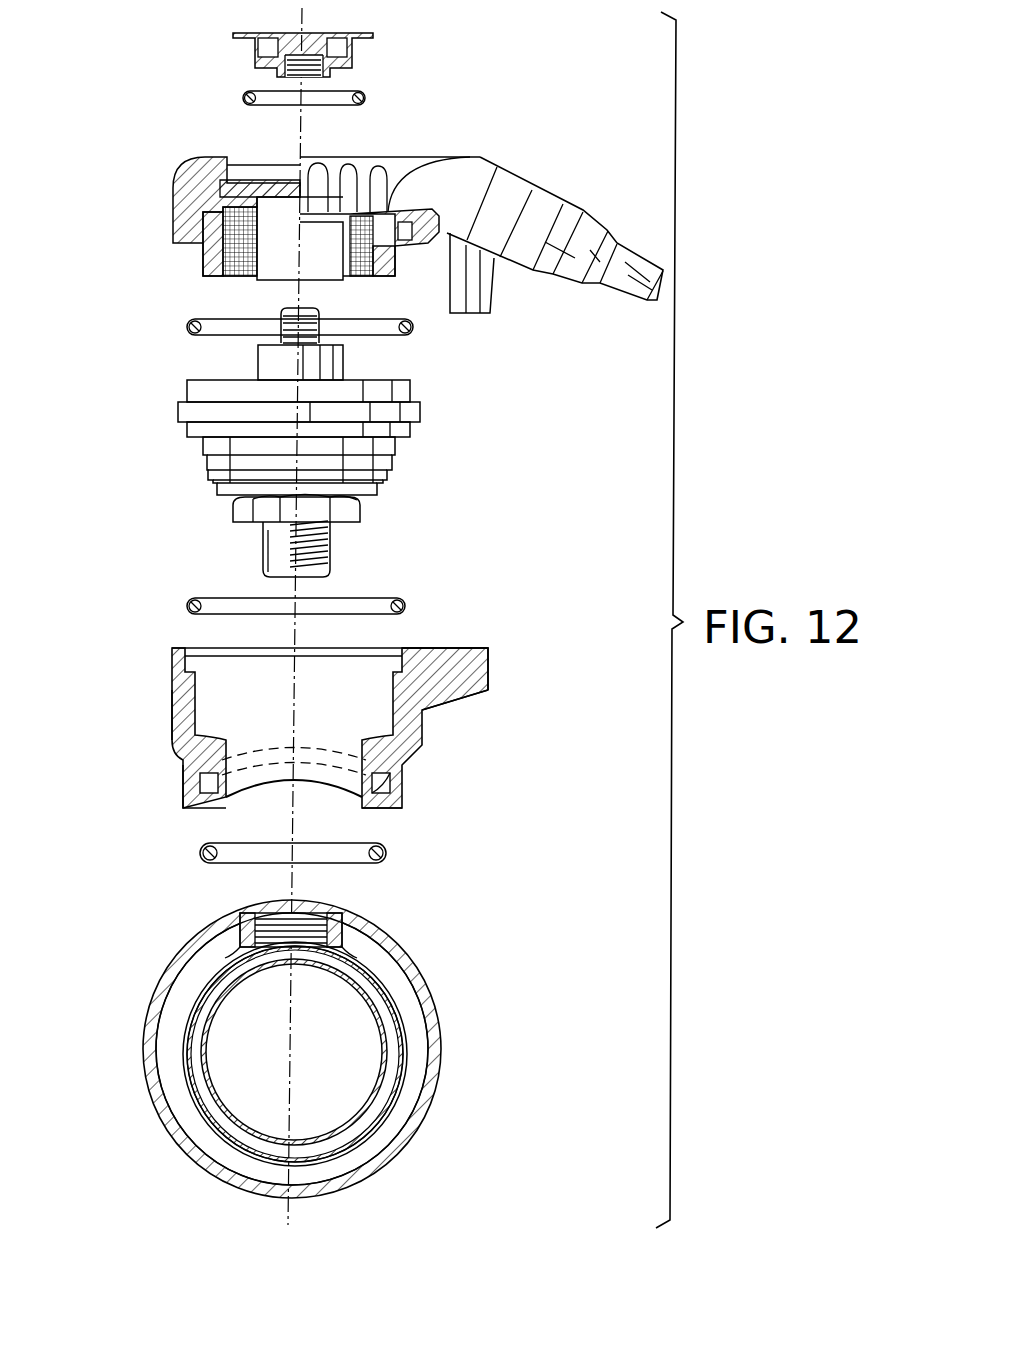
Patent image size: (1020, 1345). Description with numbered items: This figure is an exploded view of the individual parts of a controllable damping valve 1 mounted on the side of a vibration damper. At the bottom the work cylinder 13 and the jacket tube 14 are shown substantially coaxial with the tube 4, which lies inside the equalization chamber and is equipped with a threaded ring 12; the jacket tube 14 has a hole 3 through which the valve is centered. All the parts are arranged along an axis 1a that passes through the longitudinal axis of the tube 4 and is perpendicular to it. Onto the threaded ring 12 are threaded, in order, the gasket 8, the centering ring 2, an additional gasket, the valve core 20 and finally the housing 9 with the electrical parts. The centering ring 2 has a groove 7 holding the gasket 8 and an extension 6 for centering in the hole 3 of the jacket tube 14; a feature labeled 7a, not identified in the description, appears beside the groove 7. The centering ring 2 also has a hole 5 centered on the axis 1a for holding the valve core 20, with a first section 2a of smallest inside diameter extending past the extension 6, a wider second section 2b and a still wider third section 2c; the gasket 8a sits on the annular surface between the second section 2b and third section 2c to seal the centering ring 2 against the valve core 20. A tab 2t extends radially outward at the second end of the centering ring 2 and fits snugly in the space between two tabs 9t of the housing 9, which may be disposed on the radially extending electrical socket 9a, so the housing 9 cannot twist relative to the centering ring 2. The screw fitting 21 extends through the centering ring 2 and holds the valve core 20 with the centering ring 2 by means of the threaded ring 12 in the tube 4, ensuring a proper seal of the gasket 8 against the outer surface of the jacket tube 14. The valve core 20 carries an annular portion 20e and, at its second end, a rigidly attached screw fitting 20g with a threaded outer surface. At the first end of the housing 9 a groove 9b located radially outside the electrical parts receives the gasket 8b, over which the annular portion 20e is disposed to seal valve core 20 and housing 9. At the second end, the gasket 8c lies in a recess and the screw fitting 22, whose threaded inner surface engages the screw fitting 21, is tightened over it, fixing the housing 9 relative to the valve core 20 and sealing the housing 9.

The damping valve 1 is at (152, 1105).
The axis 1a is at (288, 1216).
The centering ring 2 is at (172, 700).
The first section 2a is at (184, 778).
The second section 2b is at (172, 722).
The third section 2c is at (172, 661).
The tab 2t is at (480, 692).
The hole 3 is at (365, 920).
The tube 4 is at (405, 960).
The hole 5 is at (408, 648).
The extension 6 is at (200, 800).
The groove 7 is at (401, 783).
The curved surface 7a is at (401, 805).
The gasket 8 is at (200, 852).
The gasket 8a is at (187, 606).
The gasket 8b is at (187, 327).
The gasket 8c is at (242, 95).
The housing 9 is at (173, 212).
The electrical socket 9a is at (455, 170).
The groove 9b is at (205, 246).
The tabs 9t is at (492, 300).
The threaded ring 12 is at (240, 928).
The work cylinder 13 is at (392, 1032).
The jacket tube 14 is at (428, 1090).
The valve core 20 is at (185, 434).
The annular portion 20e is at (187, 393).
The screw fitting 20g is at (287, 316).
The screw fitting 21 is at (262, 548).
The screw fitting 22 is at (248, 43).